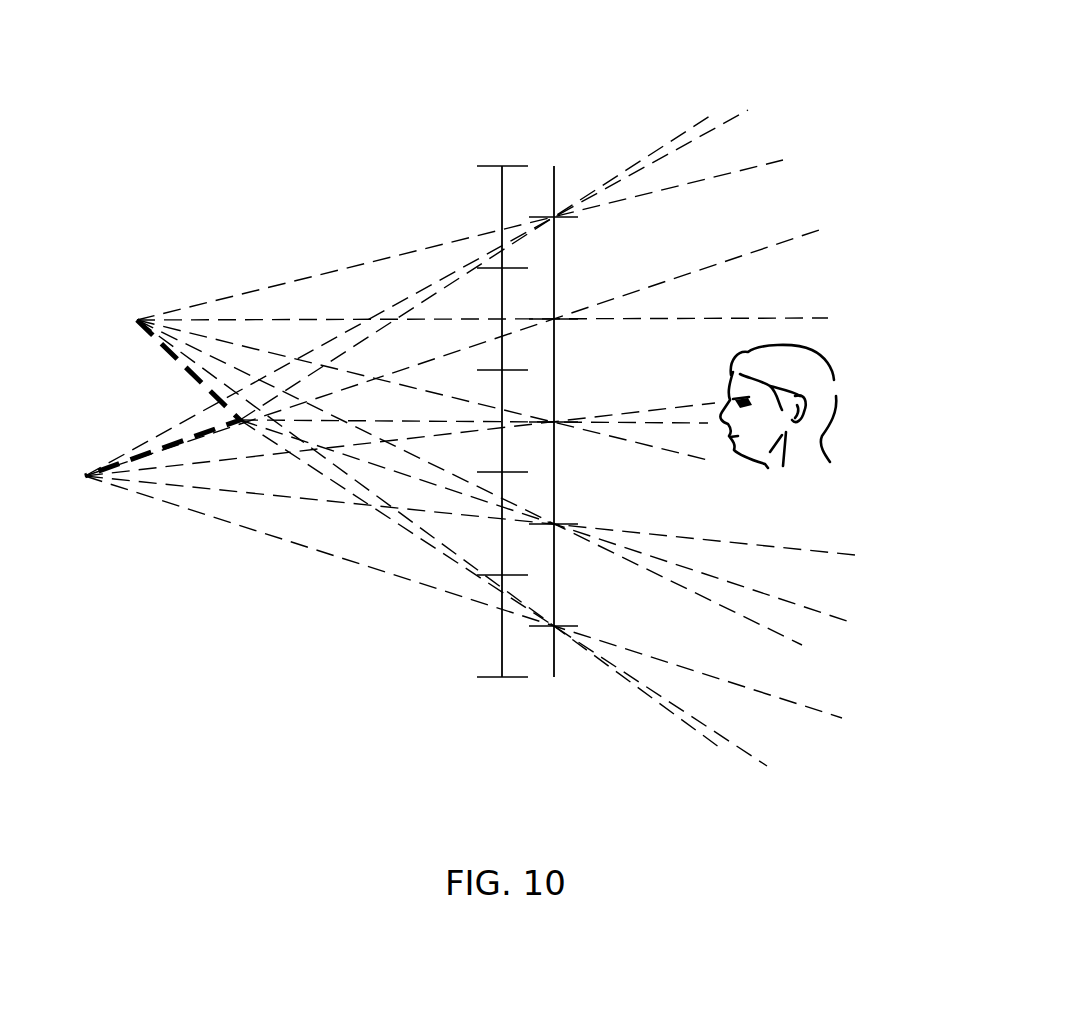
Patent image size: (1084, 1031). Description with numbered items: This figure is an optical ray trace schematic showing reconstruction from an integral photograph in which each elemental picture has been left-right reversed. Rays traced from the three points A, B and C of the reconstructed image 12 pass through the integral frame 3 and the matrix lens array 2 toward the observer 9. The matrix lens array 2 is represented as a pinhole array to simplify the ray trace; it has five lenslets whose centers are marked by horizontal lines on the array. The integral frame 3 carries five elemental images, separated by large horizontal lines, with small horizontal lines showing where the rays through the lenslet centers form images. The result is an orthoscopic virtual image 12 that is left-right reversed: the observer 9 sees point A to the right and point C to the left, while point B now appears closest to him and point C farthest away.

The matrix lens array 2 is at (583, 165).
The integral frame 3 is at (467, 184).
The observer 9 is at (742, 494).
The image 12 is at (140, 383).